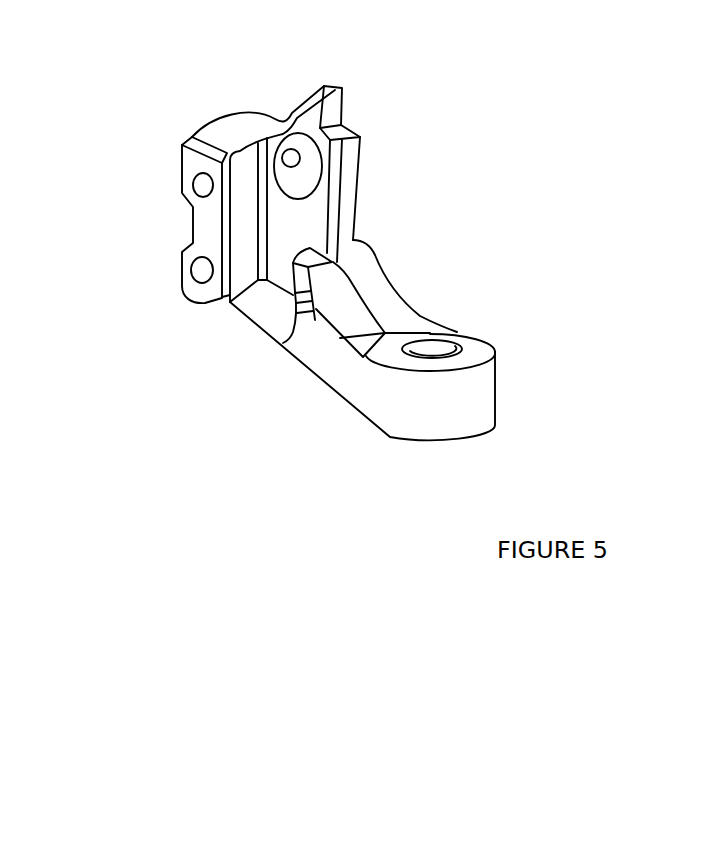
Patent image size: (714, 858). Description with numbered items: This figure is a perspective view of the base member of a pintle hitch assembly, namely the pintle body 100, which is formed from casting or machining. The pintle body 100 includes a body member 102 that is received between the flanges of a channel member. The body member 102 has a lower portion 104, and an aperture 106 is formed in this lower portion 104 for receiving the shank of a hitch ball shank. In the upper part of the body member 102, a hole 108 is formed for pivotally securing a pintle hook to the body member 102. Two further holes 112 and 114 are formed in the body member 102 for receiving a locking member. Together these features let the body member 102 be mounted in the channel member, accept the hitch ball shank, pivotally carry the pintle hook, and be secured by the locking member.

The pintle body 100 is at (165, 210).
The body member 102 is at (220, 302).
The lower portion 104 is at (517, 414).
The aperture 106 is at (442, 348).
The hole 108 is at (294, 161).
The hole 112 is at (206, 188).
The hole 114 is at (203, 275).